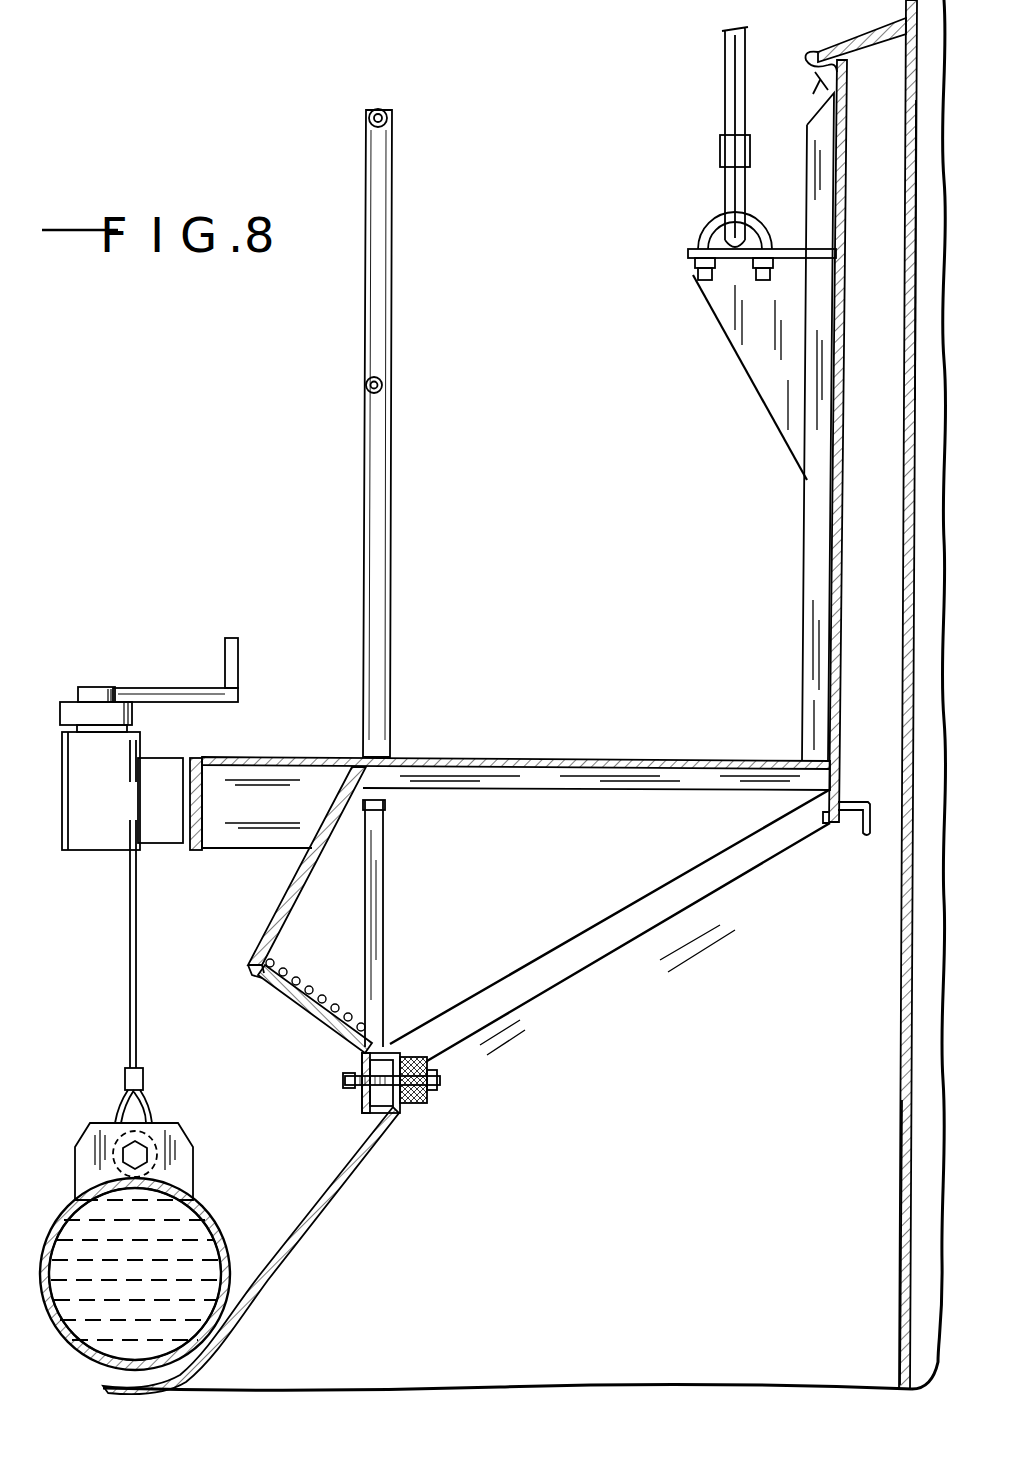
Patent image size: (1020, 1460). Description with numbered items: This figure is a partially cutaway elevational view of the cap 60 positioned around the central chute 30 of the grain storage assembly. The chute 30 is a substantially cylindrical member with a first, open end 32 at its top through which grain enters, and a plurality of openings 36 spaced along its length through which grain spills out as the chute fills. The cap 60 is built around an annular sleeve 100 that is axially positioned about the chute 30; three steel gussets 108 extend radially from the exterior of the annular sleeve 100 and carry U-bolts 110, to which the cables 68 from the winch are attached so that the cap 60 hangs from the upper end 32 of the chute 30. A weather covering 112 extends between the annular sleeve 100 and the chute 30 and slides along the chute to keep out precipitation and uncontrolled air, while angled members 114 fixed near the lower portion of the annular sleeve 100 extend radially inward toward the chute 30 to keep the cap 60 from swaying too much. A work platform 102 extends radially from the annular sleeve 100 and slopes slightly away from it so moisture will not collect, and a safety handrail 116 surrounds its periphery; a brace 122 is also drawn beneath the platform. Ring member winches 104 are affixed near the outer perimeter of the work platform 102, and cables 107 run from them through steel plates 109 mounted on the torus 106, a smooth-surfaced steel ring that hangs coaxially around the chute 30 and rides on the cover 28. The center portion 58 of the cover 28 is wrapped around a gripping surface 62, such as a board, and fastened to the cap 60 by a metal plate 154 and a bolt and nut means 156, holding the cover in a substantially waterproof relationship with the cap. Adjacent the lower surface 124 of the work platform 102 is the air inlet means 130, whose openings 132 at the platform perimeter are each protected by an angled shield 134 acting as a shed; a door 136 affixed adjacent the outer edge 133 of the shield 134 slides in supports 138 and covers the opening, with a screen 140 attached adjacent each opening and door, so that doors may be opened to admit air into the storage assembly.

The cover 28 is at (298, 1240).
The chute 30 is at (902, 576).
The first, open end 32 is at (921, 288).
The openings 36 is at (903, 1130).
The center portion 58 is at (398, 1113).
The cap 60 is at (367, 403).
The gripping surface 62 is at (404, 1108).
The cables 68 is at (725, 82).
The annular sleeve 100 is at (803, 563).
The work platform 102 is at (590, 757).
The ring member winches 104 is at (77, 853).
The torus 106 is at (224, 1241).
The cables 107 is at (128, 975).
The steel gussets 108 is at (722, 330).
The steel plates 109 is at (196, 1135).
The U-bolts 110 is at (708, 217).
The weather covering 112 is at (869, 40).
The angled members 114 is at (856, 800).
The safety handrail 116 is at (392, 280).
The diagonal brace 122 is at (587, 927).
The lower surface 124 is at (568, 790).
The air inlet means 130 is at (270, 920).
The openings 132 is at (254, 982).
The outer edge 133 is at (252, 968).
The shield 134 is at (290, 888).
The door 136 is at (376, 1045).
The supports 138 is at (300, 1022).
The screen 140 is at (318, 1000).
The metal plate 154 is at (436, 1063).
The bolt and nut means 156 is at (440, 1081).